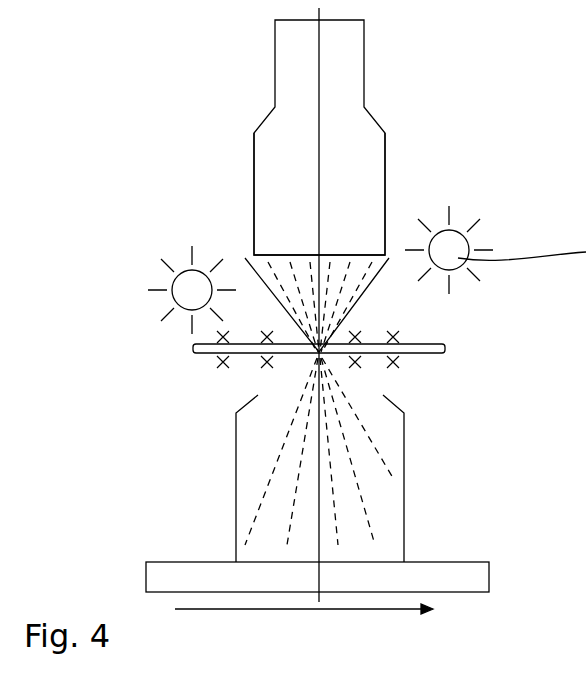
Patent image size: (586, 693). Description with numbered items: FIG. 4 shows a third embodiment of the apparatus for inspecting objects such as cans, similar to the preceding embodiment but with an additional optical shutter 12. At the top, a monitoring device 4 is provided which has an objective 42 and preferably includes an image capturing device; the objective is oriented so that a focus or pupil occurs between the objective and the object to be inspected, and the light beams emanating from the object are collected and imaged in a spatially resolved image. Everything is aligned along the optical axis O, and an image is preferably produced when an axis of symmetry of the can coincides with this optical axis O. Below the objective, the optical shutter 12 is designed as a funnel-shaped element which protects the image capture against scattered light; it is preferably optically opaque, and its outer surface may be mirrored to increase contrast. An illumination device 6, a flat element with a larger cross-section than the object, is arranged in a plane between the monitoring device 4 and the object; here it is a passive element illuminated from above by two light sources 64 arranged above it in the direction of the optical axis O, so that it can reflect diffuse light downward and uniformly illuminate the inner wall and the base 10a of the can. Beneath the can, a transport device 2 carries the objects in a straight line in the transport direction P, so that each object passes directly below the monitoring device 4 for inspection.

The monitoring device 4 is at (400, 120).
The objective 42 is at (372, 163).
The optical axis O is at (319, 227).
The optical shutter 12 is at (358, 312).
The illumination device 6 is at (262, 354).
The light sources 64 is at (172, 296).
The base 10a is at (353, 562).
The transport device 2 is at (420, 583).
The transport direction P is at (314, 610).